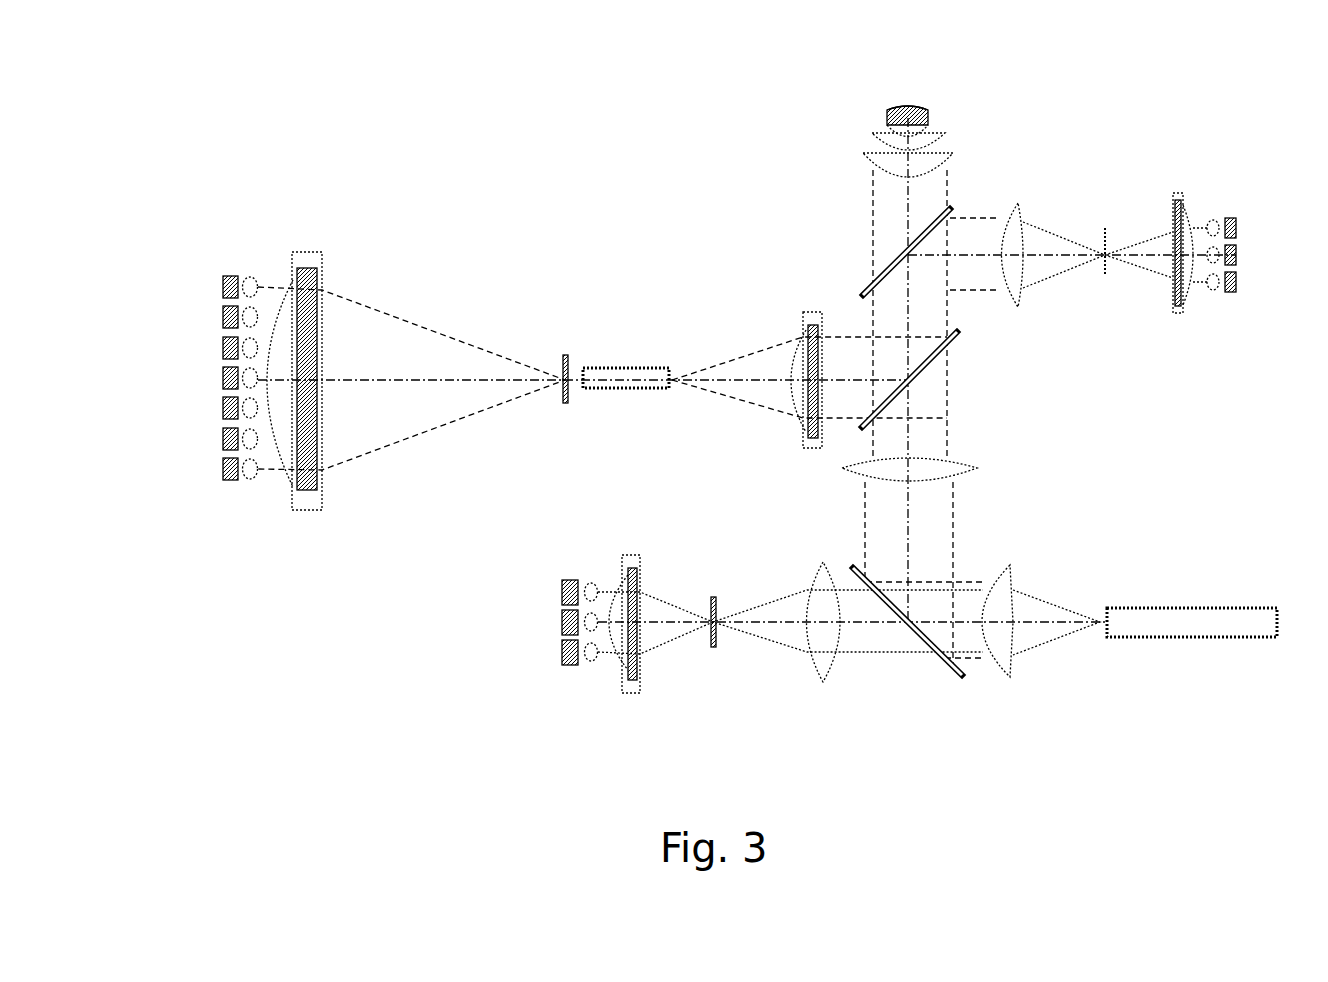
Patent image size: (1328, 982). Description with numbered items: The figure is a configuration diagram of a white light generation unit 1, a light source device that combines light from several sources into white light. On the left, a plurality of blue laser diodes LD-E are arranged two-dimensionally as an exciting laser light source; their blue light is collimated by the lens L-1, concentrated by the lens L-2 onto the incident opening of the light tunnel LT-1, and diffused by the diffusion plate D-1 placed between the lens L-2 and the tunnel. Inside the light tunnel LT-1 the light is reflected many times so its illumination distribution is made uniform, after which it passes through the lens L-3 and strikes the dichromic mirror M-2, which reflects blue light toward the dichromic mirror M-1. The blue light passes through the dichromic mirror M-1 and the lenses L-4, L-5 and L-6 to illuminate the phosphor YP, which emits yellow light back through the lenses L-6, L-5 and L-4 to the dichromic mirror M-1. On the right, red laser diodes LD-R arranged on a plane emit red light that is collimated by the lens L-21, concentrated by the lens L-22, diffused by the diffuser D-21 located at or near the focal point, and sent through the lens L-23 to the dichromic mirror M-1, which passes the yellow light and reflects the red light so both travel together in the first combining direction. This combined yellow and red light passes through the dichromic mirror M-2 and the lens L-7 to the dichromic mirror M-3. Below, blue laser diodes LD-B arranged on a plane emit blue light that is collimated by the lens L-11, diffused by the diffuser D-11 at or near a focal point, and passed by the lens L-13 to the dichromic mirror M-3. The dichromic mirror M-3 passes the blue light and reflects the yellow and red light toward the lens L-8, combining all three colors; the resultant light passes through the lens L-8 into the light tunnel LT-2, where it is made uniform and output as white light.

The white light generation unit 1 is at (441, 80).
The blue laser diodes LD-E is at (228, 275).
The lens L-1 is at (250, 272).
The lens L-2 is at (282, 452).
The diffusion plate D-1 is at (566, 352).
The light tunnel LT-1 is at (625, 368).
The lens L-3 is at (805, 335).
The dichromic mirror M-1 is at (930, 232).
The dichromic mirror M-2 is at (928, 360).
The lens L-4 is at (950, 160).
The lens L-5 is at (947, 138).
The lens L-6 is at (932, 118).
The phosphor YP is at (905, 108).
The lens L-7 is at (975, 470).
The lens L-23 is at (1020, 298).
The diffuser D-21 is at (1105, 228).
The lens L-22 is at (1185, 292).
The lens L-21 is at (1213, 222).
The red laser diodes LD-R is at (1235, 290).
The blue laser diodes LD-B is at (563, 580).
The lens L-11 is at (590, 665).
The diffuser D-11 is at (713, 652).
The lens L-13 is at (830, 665).
The dichromic mirror M-3 is at (942, 665).
The lens L-8 is at (1012, 677).
The light tunnel LT-2 is at (1160, 608).